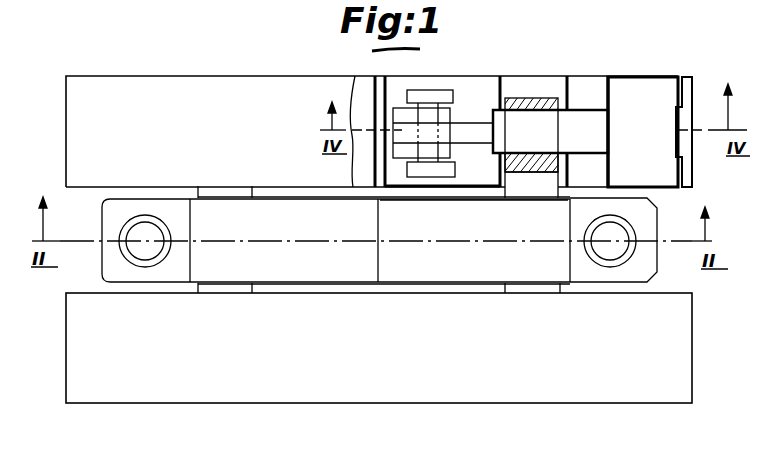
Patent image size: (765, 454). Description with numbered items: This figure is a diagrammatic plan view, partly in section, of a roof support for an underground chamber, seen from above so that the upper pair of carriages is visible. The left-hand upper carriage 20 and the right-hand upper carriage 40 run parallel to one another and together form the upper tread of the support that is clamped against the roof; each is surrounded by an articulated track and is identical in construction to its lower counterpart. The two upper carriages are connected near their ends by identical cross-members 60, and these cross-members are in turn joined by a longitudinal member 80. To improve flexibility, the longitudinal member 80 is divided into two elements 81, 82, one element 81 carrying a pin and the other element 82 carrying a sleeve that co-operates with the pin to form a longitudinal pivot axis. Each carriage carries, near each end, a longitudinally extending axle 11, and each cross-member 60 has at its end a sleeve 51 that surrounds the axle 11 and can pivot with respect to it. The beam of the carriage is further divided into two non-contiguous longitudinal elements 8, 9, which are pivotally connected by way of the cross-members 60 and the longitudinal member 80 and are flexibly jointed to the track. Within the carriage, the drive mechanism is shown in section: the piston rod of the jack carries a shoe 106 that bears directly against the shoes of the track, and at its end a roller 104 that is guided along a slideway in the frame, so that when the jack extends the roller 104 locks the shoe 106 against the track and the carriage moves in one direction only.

The carriage 20 is at (95, 83).
The carriage 40 is at (85, 377).
The cross-member 60 is at (225, 190).
The longitudinal member 80 is at (280, 243).
The element 81 is at (280, 243).
The element 82 is at (467, 243).
The longitudinal element 8 is at (367, 97).
The longitudinal element 9 is at (493, 76).
The axle 11 is at (570, 120).
The sleeve 51 is at (527, 100).
The roller 104 is at (447, 98).
The shoe 106 is at (398, 112).